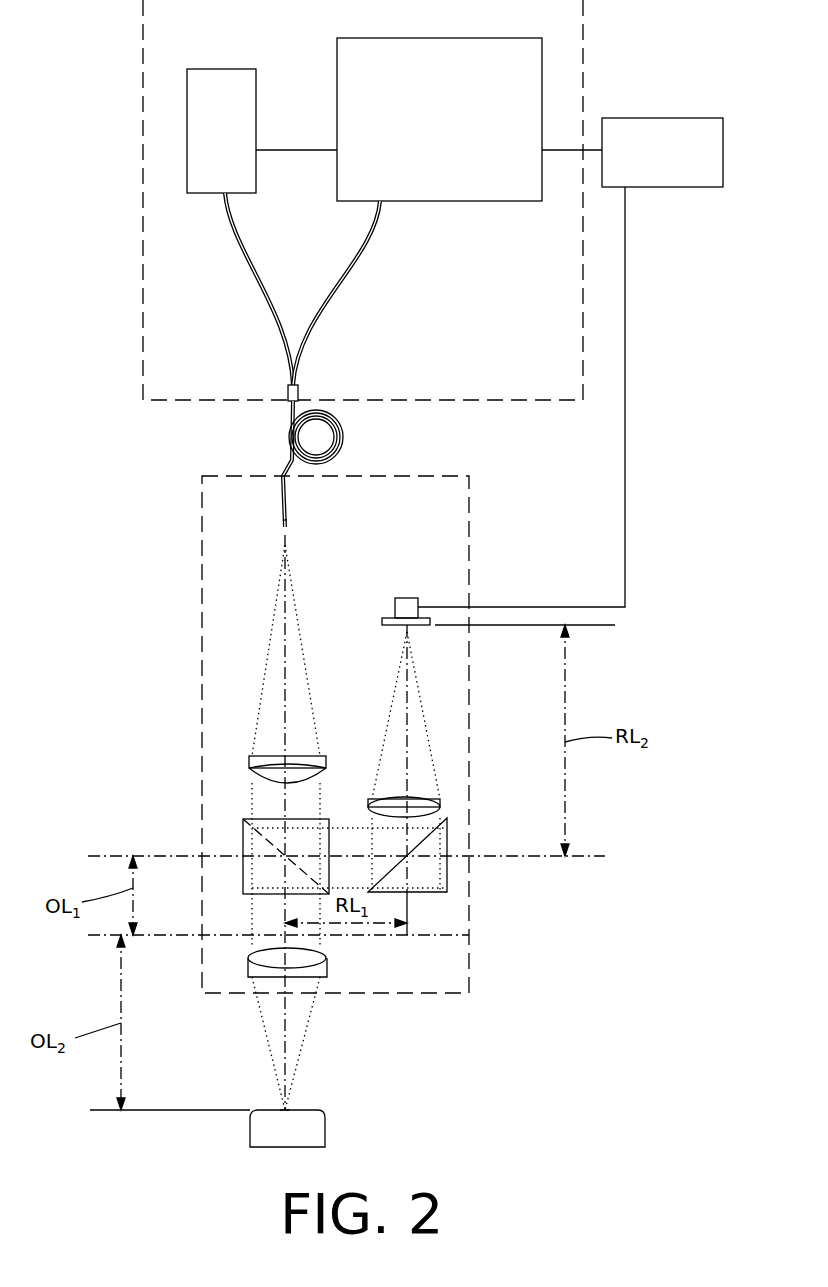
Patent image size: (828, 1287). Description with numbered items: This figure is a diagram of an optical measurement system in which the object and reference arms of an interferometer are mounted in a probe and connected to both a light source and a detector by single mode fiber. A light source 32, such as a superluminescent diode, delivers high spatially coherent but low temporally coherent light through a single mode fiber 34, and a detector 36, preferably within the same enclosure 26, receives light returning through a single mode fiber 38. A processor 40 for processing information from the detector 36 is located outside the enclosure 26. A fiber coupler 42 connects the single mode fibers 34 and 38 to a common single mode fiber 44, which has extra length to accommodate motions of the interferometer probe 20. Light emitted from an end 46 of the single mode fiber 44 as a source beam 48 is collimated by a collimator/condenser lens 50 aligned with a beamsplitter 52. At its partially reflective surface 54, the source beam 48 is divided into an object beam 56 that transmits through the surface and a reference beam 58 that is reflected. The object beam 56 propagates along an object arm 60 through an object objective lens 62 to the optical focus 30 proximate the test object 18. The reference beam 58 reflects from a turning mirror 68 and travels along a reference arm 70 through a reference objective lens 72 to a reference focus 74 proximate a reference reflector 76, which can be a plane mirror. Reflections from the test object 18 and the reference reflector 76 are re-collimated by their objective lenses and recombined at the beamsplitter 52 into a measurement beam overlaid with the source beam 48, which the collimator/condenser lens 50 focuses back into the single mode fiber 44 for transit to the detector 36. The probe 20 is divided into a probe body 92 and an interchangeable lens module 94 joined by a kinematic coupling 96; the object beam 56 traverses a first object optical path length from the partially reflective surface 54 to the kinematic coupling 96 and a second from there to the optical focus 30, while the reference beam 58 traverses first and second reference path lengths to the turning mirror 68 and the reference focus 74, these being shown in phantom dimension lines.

The test object 18 is at (325, 1112).
The interferometer probe 20 is at (525, 674).
The enclosure 26 is at (140, 172).
The optical focus 30 is at (285, 1108).
The light source 32 is at (199, 143).
The single mode fiber 34 is at (240, 240).
The detector 36 is at (409, 113).
The single mode fiber 38 is at (362, 252).
The processor 40 is at (644, 160).
The fiber coupler 42 is at (290, 383).
The single mode fiber 44 is at (285, 485).
The end 46 is at (284, 527).
The source beam 48 is at (262, 660).
The collimator/condenser lens 50 is at (249, 756).
The beamsplitter 52 is at (243, 838).
The partially reflective surface 54 is at (266, 843).
The object beam 56 is at (250, 905).
The reference beam 58 is at (343, 808).
The object arm 60 is at (212, 970).
The object objective lens 62 is at (327, 965).
The turning mirror 68 is at (447, 848).
The reference arm 70 is at (455, 765).
The reference objective lens 72 is at (440, 808).
The reference focus 74 is at (405, 627).
The reference reflector 76 is at (415, 630).
The probe body 92 is at (203, 676).
The lens module 94 is at (470, 954).
The kinematic coupling 96 is at (450, 935).